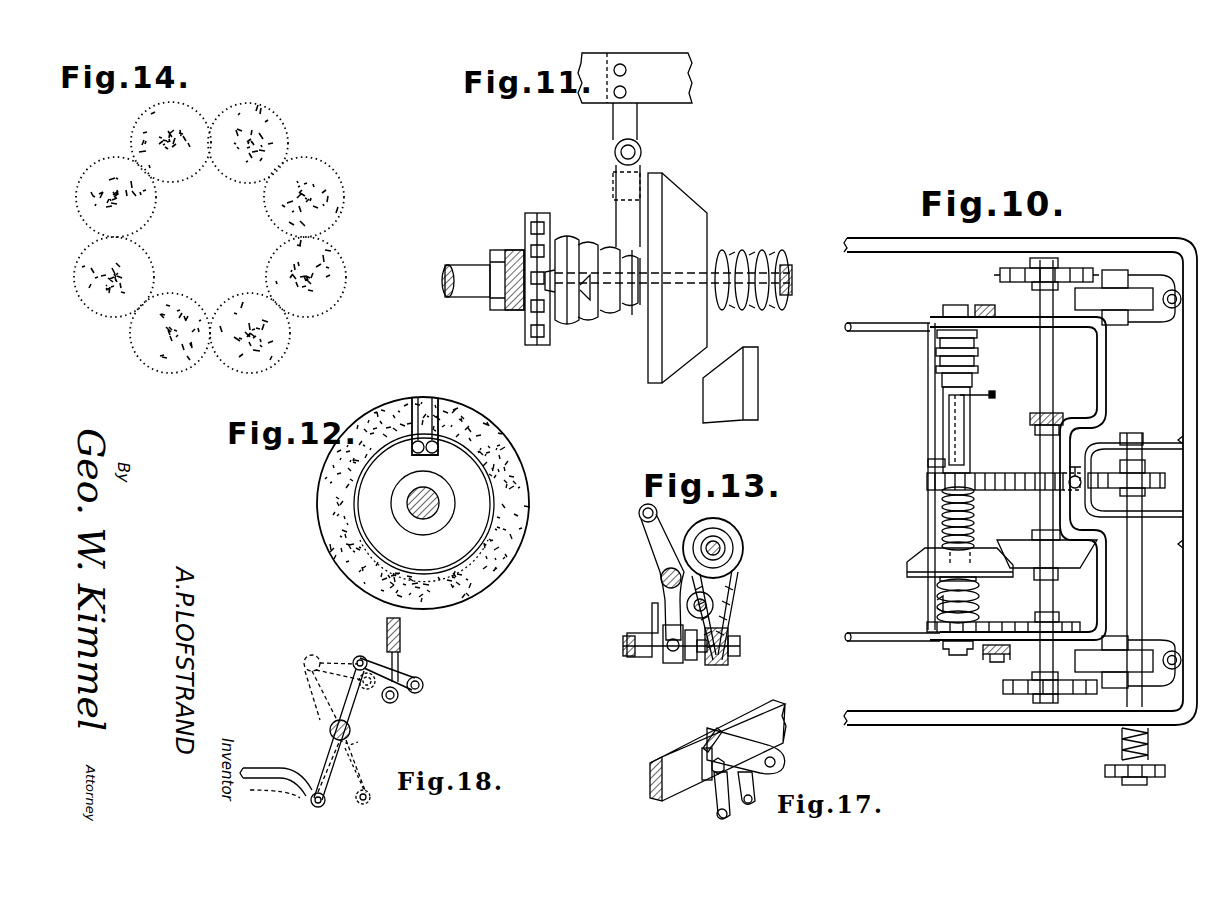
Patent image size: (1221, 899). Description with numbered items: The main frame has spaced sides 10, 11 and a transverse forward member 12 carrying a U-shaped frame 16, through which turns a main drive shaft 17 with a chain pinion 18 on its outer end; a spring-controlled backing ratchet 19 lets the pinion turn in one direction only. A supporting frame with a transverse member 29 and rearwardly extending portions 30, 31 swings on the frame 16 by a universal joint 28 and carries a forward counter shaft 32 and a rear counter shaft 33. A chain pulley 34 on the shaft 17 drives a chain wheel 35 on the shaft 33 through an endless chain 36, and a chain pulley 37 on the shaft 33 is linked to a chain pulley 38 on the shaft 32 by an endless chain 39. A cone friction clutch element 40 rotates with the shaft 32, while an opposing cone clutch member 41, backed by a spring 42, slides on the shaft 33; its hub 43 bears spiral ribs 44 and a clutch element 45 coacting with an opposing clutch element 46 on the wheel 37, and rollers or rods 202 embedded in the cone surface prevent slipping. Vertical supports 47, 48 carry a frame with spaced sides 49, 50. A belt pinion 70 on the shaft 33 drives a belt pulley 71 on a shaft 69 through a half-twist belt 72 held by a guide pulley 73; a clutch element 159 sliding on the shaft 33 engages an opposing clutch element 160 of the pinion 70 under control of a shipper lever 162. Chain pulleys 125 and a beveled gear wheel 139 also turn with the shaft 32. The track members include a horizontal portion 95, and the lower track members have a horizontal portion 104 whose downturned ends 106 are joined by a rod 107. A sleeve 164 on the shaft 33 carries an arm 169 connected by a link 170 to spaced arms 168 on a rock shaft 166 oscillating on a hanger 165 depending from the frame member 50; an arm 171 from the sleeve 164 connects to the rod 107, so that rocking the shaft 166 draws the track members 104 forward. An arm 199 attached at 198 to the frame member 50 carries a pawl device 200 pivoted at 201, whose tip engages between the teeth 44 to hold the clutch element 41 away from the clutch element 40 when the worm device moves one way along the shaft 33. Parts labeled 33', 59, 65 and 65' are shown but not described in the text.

In FIG. 10, the side 10 is at (1118, 238).
In FIG. 10, the side 11 is at (1042, 726).
In FIG. 10, the transverse forward member 12 is at (1184, 368).
In FIG. 10, the U-shaped frame 16 is at (1160, 443).
In FIG. 10, the main drive shaft 17 is at (1142, 578).
In FIG. 10, the chain pinion 18 is at (1120, 778).
In FIG. 10, the spring controlled backing ratchet 19 is at (1121, 748).
In FIG. 10, the universal joint 28 is at (1075, 466).
In FIG. 10, the transverse member 29 is at (1107, 373).
In FIG. 13, the rearwardly extending portion 30 is at (728, 640).
In FIG. 10, the rearwardly extending portion 30 is at (1072, 328).
In FIG. 11, the rearwardly extending portion 31 is at (510, 310).
In FIG. 10, the rearwardly extending portion 31 is at (1063, 641).
In FIG. 12, the forward counter shaft 32 is at (432, 492).
In FIG. 10, the forward counter shaft 32 is at (1054, 376).
In FIG. 18, the rear counter shaft 33 is at (365, 772).
In FIG. 11, the rear counter shaft 33 is at (466, 295).
In FIG. 13, the rear counter shaft 33 is at (677, 643).
In FIG. 10, the rear counter shaft 33 is at (950, 518).
In FIG. 11, the nut 33' is at (772, 282).
In FIG. 10, the chain pulley 34 is at (1155, 478).
In FIG. 10, the chain wheel 35 is at (985, 473).
In FIG. 10, the endless chain 36 is at (1020, 473).
In FIG. 11, the chain pulley 37 is at (526, 232).
In FIG. 10, the chain pulley 37 is at (938, 645).
In FIG. 10, the chain pulley 38 is at (1060, 617).
In FIG. 10, the endless chain 39 is at (1027, 622).
In FIG. 12, the cone friction clutch element 40 is at (386, 408).
In FIG. 11, the cone friction clutch element 40 is at (760, 380).
In FIG. 10, the cone friction clutch element 40 is at (1020, 545).
In FIG. 11, the cone friction clutch member 41 is at (690, 210).
In FIG. 10, the cone friction clutch member 41 is at (912, 558).
In FIG. 11, the spring 42 is at (752, 252).
In FIG. 10, the spring 42 is at (975, 520).
In FIG. 11, the hub 43 is at (636, 310).
In FIG. 10, the hub 43 is at (979, 586).
In FIG. 11, the spiral ribs 44 is at (592, 300).
In FIG. 10, the spiral ribs 44 is at (979, 600).
In FIG. 11, the clutch element 45 is at (574, 240).
In FIG. 10, the clutch element 45 is at (979, 612).
In FIG. 11, the opposing clutch element 46 is at (560, 292).
In FIG. 10, the opposing clutch element 46 is at (937, 604).
In FIG. 10, the vertical support 47 is at (980, 306).
In FIG. 10, the vertical support 48 is at (992, 660).
In FIG. 17, the side 49 is at (668, 760).
In FIG. 18, the side 50 is at (387, 634).
In FIG. 11, the side 50 is at (598, 104).
In FIG. 11, the collar 59 is at (612, 250).
In FIG. 10, the bearing 65 is at (1128, 292).
In FIG. 10, the bearing 65' is at (1128, 651).
In FIG. 13, the shaft 69 is at (718, 544).
In FIG. 13, the belt pinion 70 is at (720, 665).
In FIG. 10, the belt pinion 70 is at (977, 340).
In FIG. 13, the belt pulley 71 is at (743, 551).
In FIG. 13, the belt 72 is at (735, 580).
In FIG. 13, the guide pulley 73 is at (732, 600).
In FIG. 10, the horizontal portion 95 is at (882, 323).
In FIG. 18, the horizontal portion 104 is at (266, 768).
In FIG. 18, the downwardly curved portion 106 is at (305, 792).
In FIG. 18, the rod 107 is at (323, 805).
In FIG. 10, the rod 107 is at (928, 434).
In FIG. 10, the chain pulley 125 is at (1008, 272).
In FIG. 10, the beveled gear wheel 139 is at (1060, 418).
In FIG. 13, the clutch element 159 is at (678, 664).
In FIG. 10, the clutch element 159 is at (936, 367).
In FIG. 13, the opposing clutch element 160 is at (700, 660).
In FIG. 10, the opposing clutch element 160 is at (975, 352).
In FIG. 13, the shipper lever 162 is at (655, 548).
In FIG. 18, the sleeve 164 is at (330, 730).
In FIG. 13, the sleeve 164 is at (642, 658).
In FIG. 10, the sleeve 164 is at (970, 445).
In FIG. 18, the hanger 165 is at (400, 662).
In FIG. 17, the hanger 165 is at (714, 806).
In FIG. 18, the rock shaft 166 is at (393, 706).
In FIG. 18, the arm 168 is at (398, 697).
In FIG. 18, the arm 169 is at (345, 700).
In FIG. 13, the arm 169 is at (652, 612).
In FIG. 18, the link 170 is at (423, 680).
In FIG. 10, the link 170 is at (994, 392).
In FIG. 18, the arm 171 is at (330, 748).
In FIG. 10, the arm 171 is at (928, 464).
In FIG. 11, the attachment point 198 is at (628, 75).
In FIG. 11, the arm 199 is at (634, 118).
In FIG. 11, the pawl device 200 is at (622, 197).
In FIG. 10, the pawl device 200 is at (940, 582).
In FIG. 11, the pivot 201 is at (640, 151).
In FIG. 12, the rollers or rods 202 is at (430, 400).